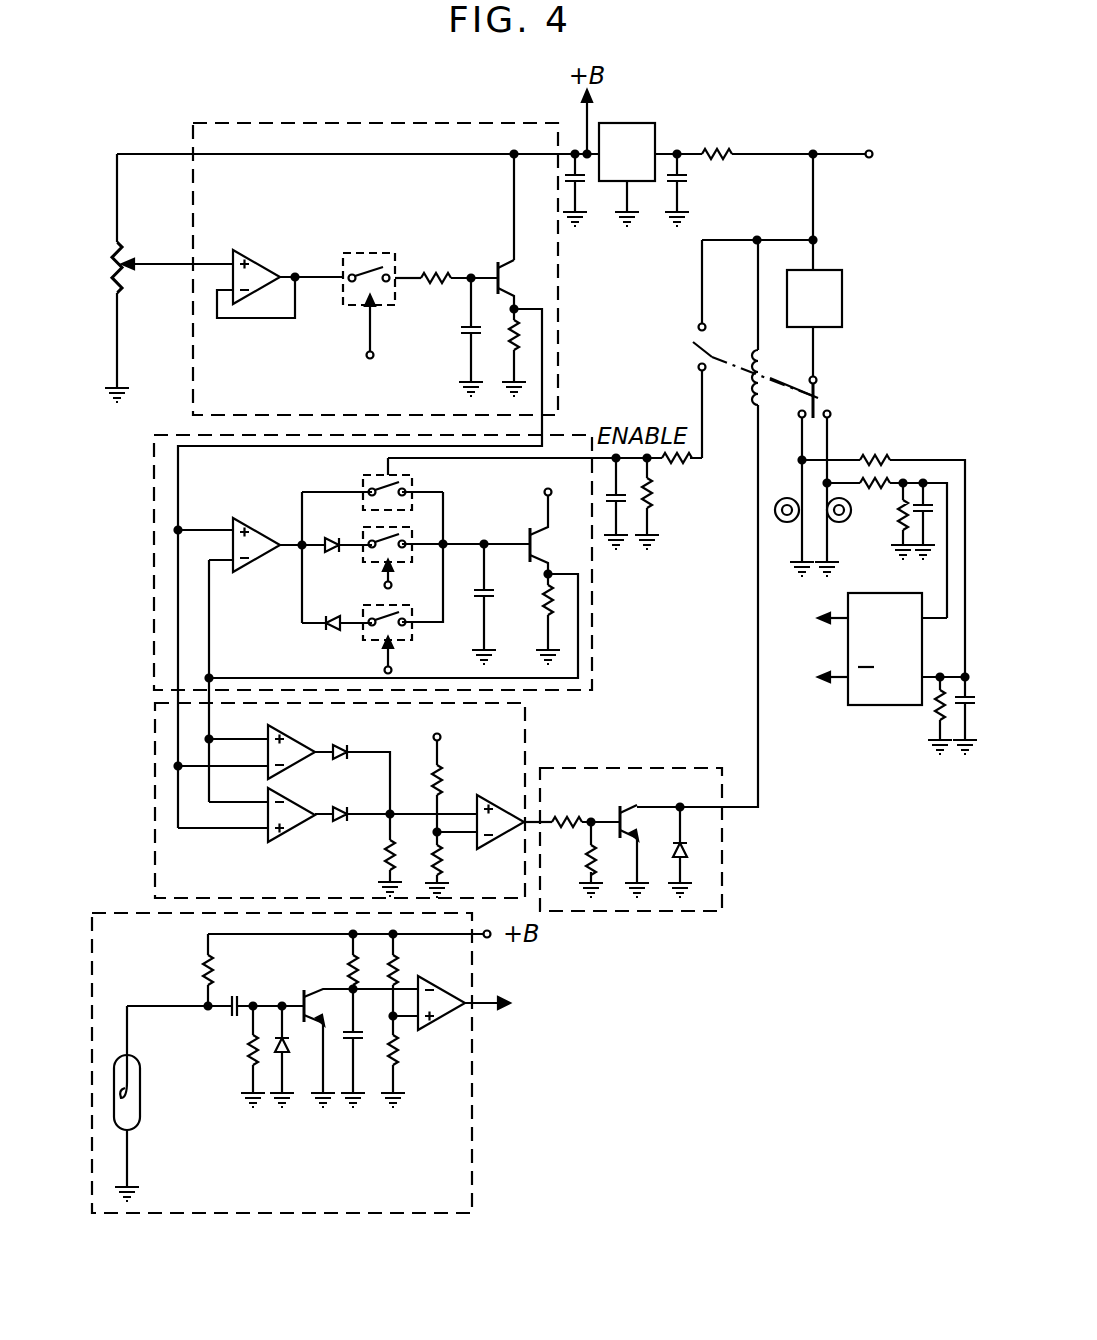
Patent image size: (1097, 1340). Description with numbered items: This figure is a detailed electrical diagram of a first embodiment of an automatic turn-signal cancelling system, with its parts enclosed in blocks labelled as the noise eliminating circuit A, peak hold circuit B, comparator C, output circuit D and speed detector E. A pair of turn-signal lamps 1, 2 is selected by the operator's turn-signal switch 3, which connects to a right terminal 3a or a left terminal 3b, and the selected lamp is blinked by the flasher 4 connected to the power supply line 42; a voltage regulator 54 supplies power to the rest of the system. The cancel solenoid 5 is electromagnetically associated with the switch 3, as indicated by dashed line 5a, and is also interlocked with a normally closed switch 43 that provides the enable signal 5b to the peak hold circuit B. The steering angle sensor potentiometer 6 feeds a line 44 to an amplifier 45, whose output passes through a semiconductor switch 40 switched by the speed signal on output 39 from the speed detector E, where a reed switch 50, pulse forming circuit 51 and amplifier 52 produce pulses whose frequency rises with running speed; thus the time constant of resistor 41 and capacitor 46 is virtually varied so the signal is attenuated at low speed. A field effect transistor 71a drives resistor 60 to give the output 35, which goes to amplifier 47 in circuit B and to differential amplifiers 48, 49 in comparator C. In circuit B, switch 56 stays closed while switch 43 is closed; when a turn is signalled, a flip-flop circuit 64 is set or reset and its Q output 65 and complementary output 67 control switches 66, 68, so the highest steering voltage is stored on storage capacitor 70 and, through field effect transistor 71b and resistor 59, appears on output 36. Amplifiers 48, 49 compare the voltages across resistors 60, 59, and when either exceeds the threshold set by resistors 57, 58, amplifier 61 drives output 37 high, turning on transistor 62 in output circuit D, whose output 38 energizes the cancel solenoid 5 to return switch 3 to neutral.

The turn-signal lamp 1 is at (783, 498).
The turn-signal lamp 2 is at (848, 521).
The turn-signal switch 3 is at (818, 396).
The right terminal 3a is at (832, 414).
The left terminal 3b is at (798, 416).
The flasher 4 is at (843, 278).
The cancel solenoid 5 is at (753, 400).
The dashed line 5a is at (786, 374).
The enable signal 5b is at (728, 354).
The steering angle sensor potentiometer 6 is at (104, 270).
The output of noise eliminating circuit 35 is at (552, 365).
The output of peak hold circuit 36 is at (592, 616).
The output of comparator 37 is at (536, 822).
The output of output circuit 38 is at (762, 788).
The output of speed detector 39 is at (362, 336).
The semiconductor switch 40 is at (366, 256).
The resistor 41 is at (434, 270).
The power supply line 42 is at (838, 152).
The normally closed switch 43 is at (695, 348).
The line 44 is at (152, 266).
The amplifier 45 is at (254, 268).
The capacitor 46 is at (458, 336).
The amplifier 47 is at (252, 530).
The differential amplifier 48 is at (298, 742).
The differential amplifier 49 is at (302, 808).
The reed switch 50 is at (140, 1120).
The pulse forming circuit 51 is at (272, 1020).
The amplifier 52 is at (452, 1022).
The voltage regulator 54 is at (634, 128).
The semiconductor switch 56 is at (413, 488).
The resistor 57 is at (446, 778).
The resistor 58 is at (447, 862).
The resistor 59 is at (540, 606).
The resistor 60 is at (512, 338).
The amplifier 61 is at (514, 806).
The transistor 62 is at (619, 812).
The flip-flop circuit 64 is at (868, 595).
The Q output 65 is at (843, 618).
The semiconductor switch 66 is at (413, 537).
The control signal line c 67 is at (843, 677).
The semiconductor switch 68 is at (413, 634).
The storage capacitor 70 is at (494, 594).
The field effect transistor 71a is at (514, 290).
The field effect transistor 71b is at (528, 531).
The noise eliminating circuit A is at (314, 125).
The peak hold circuit B is at (152, 565).
The comparator C is at (156, 803).
The output circuit D is at (722, 880).
The speed detector E is at (474, 1126).